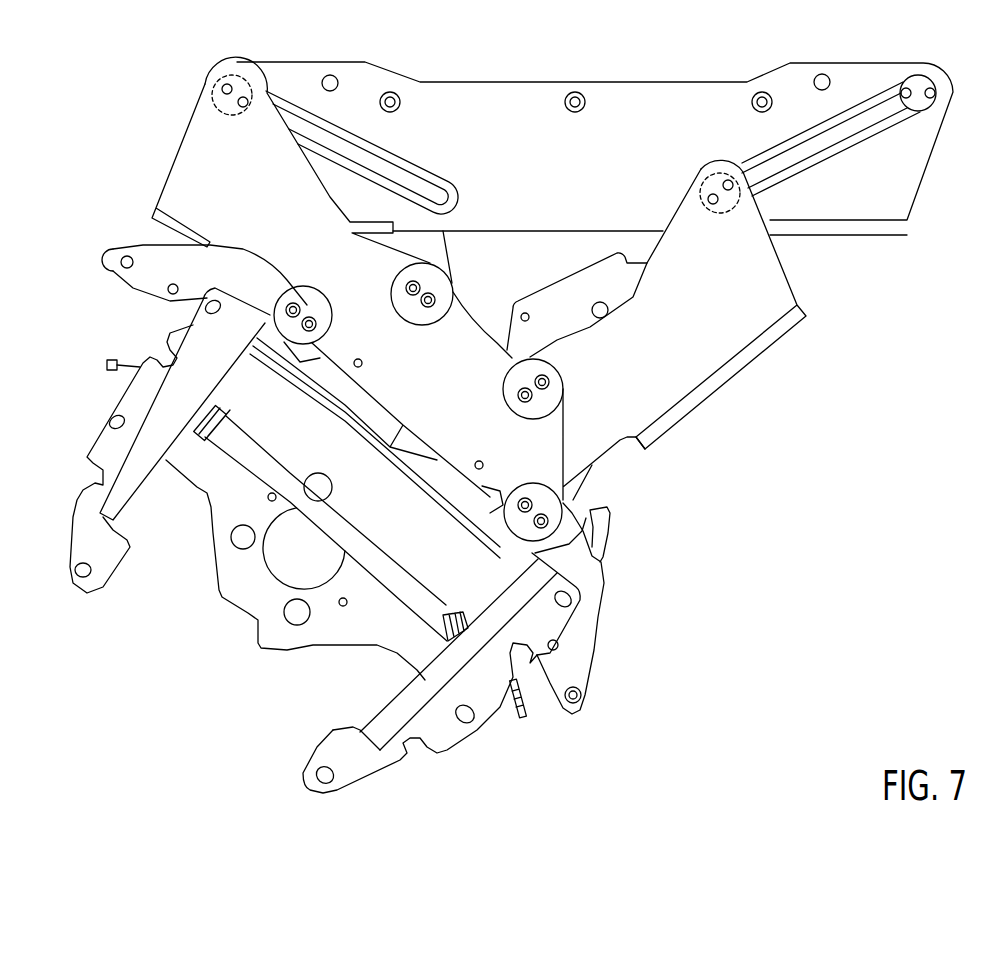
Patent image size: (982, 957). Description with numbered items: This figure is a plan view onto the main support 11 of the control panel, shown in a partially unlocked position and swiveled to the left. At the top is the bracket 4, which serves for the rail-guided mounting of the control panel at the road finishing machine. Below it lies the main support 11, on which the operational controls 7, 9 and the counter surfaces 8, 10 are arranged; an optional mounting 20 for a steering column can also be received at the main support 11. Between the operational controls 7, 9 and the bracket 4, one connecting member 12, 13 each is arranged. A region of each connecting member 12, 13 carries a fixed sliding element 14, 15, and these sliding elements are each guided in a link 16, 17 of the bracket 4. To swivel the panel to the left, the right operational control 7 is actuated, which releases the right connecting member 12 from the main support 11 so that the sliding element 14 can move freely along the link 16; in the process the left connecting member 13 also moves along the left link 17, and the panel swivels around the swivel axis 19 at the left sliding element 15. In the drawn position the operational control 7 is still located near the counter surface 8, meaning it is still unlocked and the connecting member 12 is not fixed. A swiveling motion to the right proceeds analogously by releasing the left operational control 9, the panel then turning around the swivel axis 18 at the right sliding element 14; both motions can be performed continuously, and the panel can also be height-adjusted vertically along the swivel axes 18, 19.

The bracket 4 is at (535, 95).
The operational control 7 is at (584, 663).
The counter surface 8 is at (527, 717).
The operational control 9 is at (150, 275).
The counter surface 10 is at (110, 367).
The main support 11 is at (467, 342).
The connecting member 12 is at (755, 317).
The connecting member 13 is at (190, 168).
The sliding element 14 is at (703, 180).
The sliding element 15 is at (233, 115).
The link 16 is at (850, 130).
The link 17 is at (417, 180).
The swivel axis 18 is at (727, 210).
The swivel axis 19 is at (233, 100).
The mounting 20 is at (290, 570).